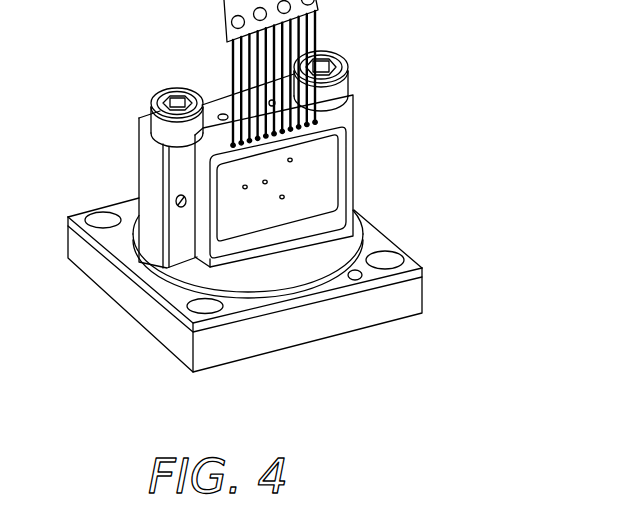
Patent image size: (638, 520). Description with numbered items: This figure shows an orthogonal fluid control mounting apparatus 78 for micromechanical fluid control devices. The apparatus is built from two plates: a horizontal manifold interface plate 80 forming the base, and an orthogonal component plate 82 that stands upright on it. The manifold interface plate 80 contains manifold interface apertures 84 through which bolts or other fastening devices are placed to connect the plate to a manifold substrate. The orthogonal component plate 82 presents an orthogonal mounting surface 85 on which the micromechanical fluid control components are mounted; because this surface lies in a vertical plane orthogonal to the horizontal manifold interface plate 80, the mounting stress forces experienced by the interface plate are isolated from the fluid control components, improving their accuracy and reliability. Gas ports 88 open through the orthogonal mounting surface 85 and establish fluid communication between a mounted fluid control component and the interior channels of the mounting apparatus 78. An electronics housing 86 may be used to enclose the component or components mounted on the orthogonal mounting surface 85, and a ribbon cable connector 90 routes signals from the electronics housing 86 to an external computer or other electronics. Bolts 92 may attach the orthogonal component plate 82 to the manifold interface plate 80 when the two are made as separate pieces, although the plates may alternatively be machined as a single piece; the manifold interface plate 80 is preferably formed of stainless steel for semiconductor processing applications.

The orthogonal fluid control mounting apparatus 78 is at (470, 107).
The manifold interface plate 80 is at (362, 312).
The orthogonal component plate 82 is at (152, 163).
The manifold interface apertures 84 is at (103, 220).
The orthogonal mounting surface 85 is at (316, 150).
The electronics housing 86 is at (335, 124).
The gas ports 88 is at (290, 160).
The ribbon cable connector 90 is at (317, 33).
The bolts 92 is at (178, 89).